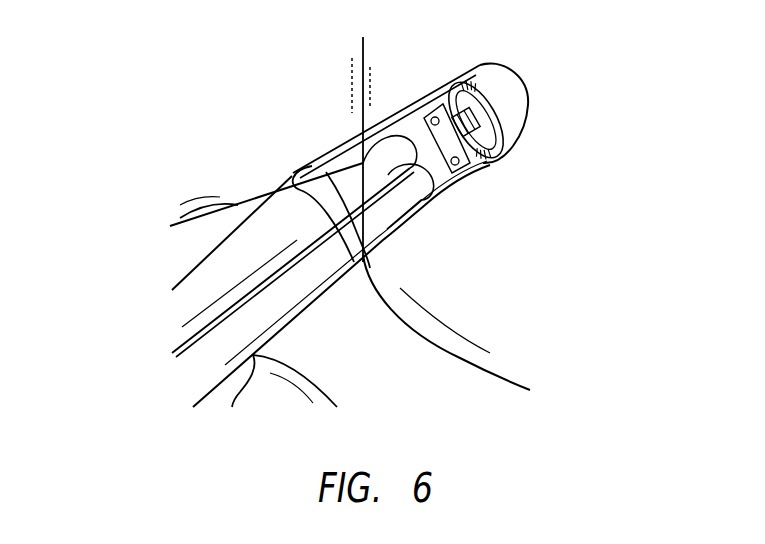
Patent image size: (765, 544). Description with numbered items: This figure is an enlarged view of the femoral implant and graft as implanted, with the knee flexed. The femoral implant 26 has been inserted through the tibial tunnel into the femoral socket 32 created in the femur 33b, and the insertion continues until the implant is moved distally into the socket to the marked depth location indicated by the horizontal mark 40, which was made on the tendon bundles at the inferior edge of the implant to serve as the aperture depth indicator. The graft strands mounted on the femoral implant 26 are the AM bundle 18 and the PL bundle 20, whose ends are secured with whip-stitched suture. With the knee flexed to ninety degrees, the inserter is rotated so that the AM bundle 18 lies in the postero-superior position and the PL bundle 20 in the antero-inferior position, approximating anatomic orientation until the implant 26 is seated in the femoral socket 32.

The AM bundle 18 is at (280, 197).
The PL bundle 20 is at (217, 273).
The femoral implant 26 is at (505, 73).
The femoral socket 32 is at (507, 118).
The horizontal mark 40 is at (425, 205).
The femur 33b is at (483, 300).